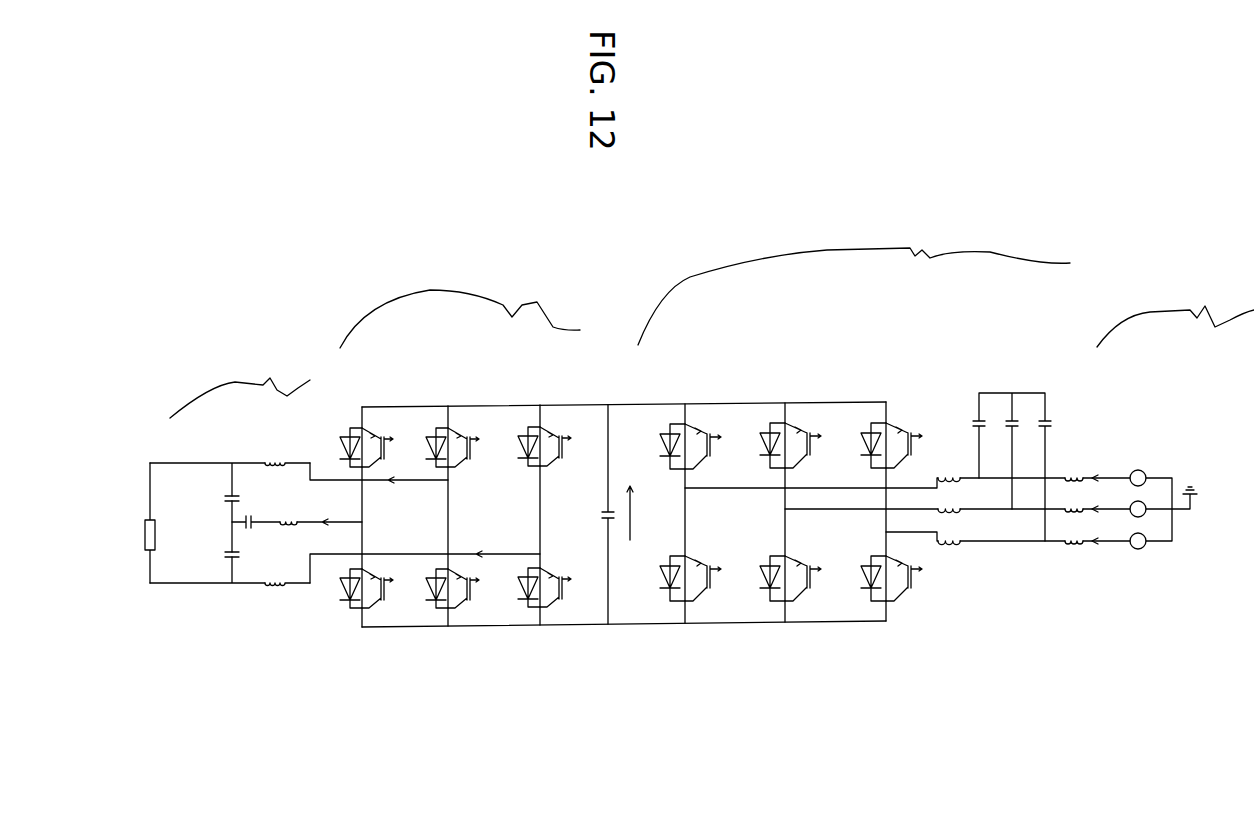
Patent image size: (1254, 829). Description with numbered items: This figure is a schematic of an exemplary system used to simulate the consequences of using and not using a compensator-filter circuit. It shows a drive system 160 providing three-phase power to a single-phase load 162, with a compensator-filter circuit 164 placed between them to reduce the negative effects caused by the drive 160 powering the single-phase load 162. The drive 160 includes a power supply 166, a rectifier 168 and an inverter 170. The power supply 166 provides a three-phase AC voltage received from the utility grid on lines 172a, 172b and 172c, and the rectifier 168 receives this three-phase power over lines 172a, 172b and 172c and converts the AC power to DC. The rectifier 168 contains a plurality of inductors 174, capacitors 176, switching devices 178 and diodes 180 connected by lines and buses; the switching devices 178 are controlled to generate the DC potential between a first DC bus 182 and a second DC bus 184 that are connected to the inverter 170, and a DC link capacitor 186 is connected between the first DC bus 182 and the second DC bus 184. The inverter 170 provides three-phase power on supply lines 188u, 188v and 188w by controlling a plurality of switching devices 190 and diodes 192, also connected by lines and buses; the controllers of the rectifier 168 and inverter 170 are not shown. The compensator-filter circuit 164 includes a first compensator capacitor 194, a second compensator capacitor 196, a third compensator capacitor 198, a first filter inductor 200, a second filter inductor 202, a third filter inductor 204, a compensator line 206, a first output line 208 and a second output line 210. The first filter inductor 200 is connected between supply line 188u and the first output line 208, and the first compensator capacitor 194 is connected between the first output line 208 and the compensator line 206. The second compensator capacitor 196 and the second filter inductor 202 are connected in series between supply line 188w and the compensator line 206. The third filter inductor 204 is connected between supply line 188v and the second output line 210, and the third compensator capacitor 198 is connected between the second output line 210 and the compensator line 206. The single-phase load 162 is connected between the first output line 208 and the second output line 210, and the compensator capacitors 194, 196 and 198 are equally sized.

The drive system 160 is at (908, 785).
The single-phase load 162 is at (143, 523).
The compensator-filter circuit 164 is at (267, 377).
The power supply 166 is at (1197, 310).
The rectifier 168 is at (927, 243).
The inverter 170 is at (519, 313).
The line 172a is at (1115, 537).
The line 172b is at (1120, 497).
The line 172c is at (1112, 473).
The inductors 174 is at (1073, 480).
The capacitors 176 is at (1045, 420).
The switching devices 178 is at (716, 450).
The diodes 180 is at (670, 567).
The first DC bus 182 is at (643, 620).
The second DC bus 184 is at (638, 400).
The DC link capacitor 186 is at (605, 520).
The supply line 188u is at (337, 557).
The supply line 188v is at (328, 475).
The supply line 188w is at (345, 522).
The switching devices 190 is at (413, 407).
The diodes 192 is at (343, 407).
The first compensator capacitor 194 is at (230, 580).
The second compensator capacitor 196 is at (255, 517).
The third compensator capacitor 198 is at (228, 498).
The first filter inductor 200 is at (262, 588).
The second filter inductor 202 is at (292, 530).
The third filter inductor 204 is at (285, 460).
The compensator line 206 is at (230, 528).
The first output line 208 is at (228, 560).
The second output line 210 is at (232, 462).